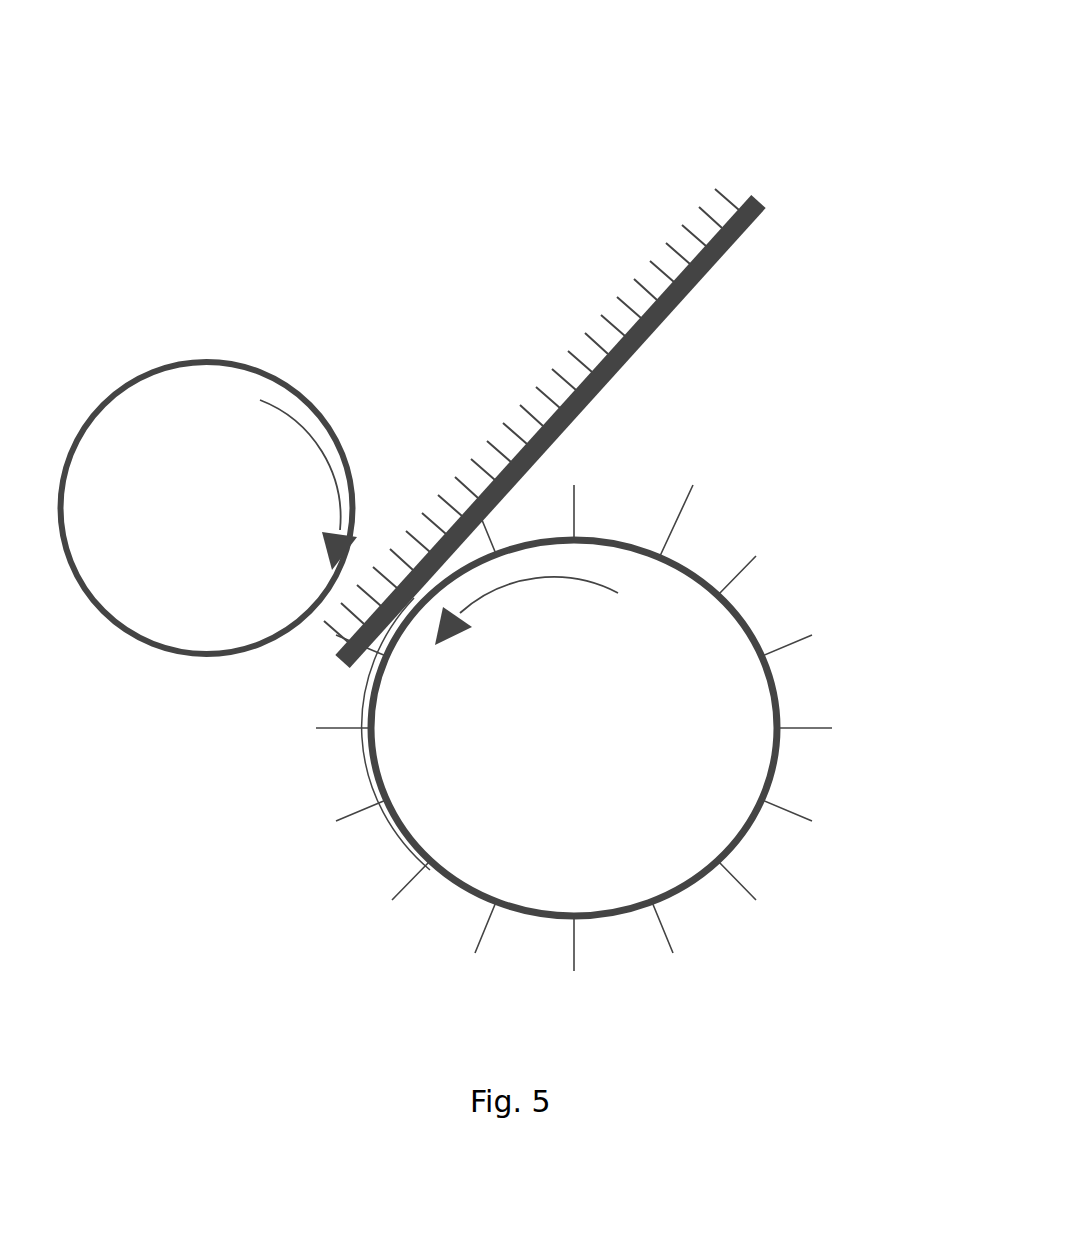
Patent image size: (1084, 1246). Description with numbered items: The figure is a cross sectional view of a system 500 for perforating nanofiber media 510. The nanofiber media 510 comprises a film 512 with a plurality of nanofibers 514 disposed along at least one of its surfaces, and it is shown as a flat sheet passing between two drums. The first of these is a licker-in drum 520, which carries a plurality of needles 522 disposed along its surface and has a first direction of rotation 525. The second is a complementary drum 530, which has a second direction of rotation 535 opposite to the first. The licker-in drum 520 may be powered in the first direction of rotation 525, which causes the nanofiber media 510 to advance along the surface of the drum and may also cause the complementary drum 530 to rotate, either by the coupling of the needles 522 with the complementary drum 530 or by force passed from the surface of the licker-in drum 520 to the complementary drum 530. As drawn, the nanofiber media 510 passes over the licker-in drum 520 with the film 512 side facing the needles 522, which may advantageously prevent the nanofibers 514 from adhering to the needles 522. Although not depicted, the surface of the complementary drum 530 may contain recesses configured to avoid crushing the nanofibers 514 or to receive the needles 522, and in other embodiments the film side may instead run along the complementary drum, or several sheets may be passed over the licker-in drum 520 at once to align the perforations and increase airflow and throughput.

The system 500 is at (537, 56).
The nanofiber media 510 is at (648, 387).
The film 512 is at (763, 209).
The nanofibers 514 is at (713, 188).
The licker-in drum 520 is at (693, 567).
The needles 522 is at (742, 573).
The first direction of rotation 525 is at (544, 611).
The complementary drum 530 is at (142, 377).
The second direction of rotation 535 is at (287, 479).